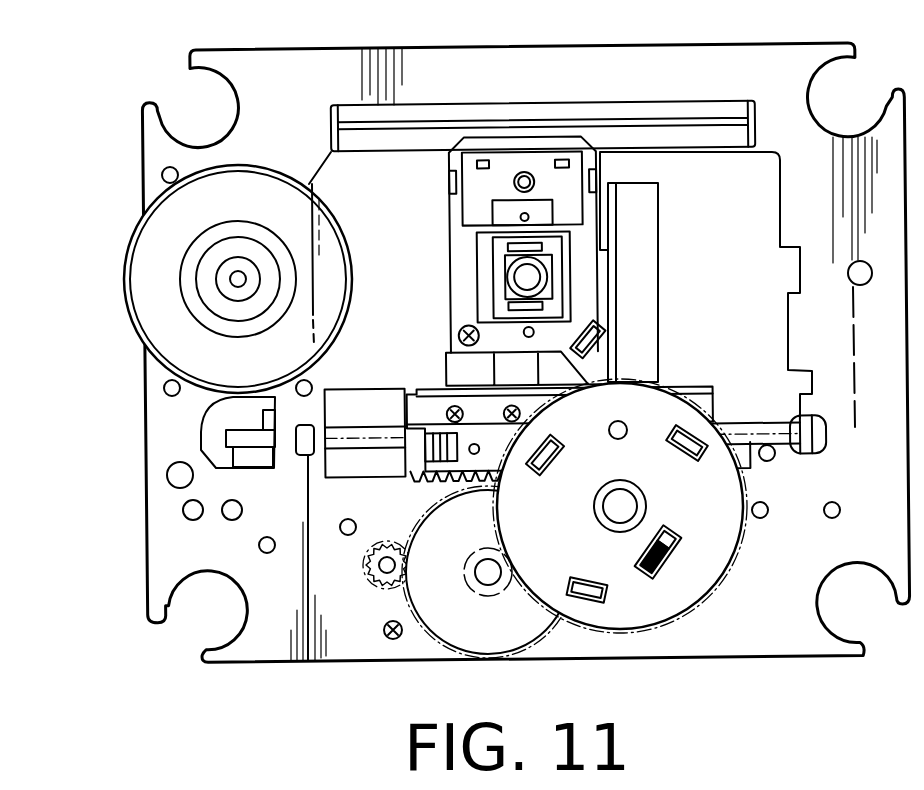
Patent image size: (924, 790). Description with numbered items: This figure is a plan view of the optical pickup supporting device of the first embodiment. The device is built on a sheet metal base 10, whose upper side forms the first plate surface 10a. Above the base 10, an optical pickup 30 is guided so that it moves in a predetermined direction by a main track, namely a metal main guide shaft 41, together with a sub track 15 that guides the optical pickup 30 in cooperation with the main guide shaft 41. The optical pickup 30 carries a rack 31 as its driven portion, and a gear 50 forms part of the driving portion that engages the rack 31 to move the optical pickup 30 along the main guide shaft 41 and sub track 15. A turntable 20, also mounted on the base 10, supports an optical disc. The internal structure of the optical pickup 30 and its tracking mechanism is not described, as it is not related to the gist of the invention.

The sheet metal base 10 is at (270, 625).
The first plate surface 10a is at (350, 627).
The sub track 15 is at (437, 135).
The turntable 20 is at (147, 250).
The optical pickup 30 is at (475, 228).
The rack 31 is at (488, 443).
The main guide shaft 41 is at (367, 438).
The gear 50 is at (672, 593).